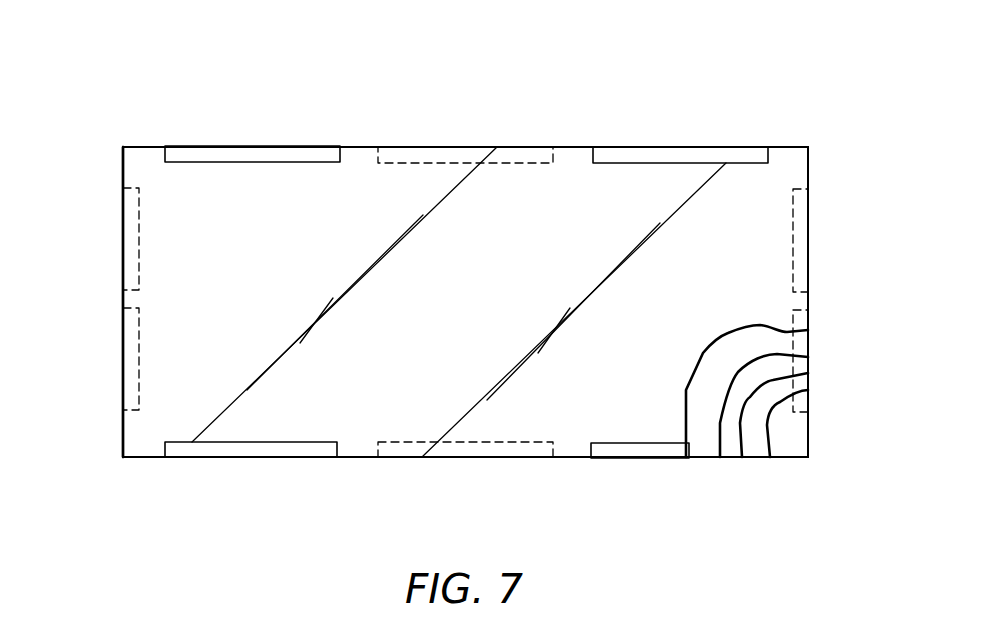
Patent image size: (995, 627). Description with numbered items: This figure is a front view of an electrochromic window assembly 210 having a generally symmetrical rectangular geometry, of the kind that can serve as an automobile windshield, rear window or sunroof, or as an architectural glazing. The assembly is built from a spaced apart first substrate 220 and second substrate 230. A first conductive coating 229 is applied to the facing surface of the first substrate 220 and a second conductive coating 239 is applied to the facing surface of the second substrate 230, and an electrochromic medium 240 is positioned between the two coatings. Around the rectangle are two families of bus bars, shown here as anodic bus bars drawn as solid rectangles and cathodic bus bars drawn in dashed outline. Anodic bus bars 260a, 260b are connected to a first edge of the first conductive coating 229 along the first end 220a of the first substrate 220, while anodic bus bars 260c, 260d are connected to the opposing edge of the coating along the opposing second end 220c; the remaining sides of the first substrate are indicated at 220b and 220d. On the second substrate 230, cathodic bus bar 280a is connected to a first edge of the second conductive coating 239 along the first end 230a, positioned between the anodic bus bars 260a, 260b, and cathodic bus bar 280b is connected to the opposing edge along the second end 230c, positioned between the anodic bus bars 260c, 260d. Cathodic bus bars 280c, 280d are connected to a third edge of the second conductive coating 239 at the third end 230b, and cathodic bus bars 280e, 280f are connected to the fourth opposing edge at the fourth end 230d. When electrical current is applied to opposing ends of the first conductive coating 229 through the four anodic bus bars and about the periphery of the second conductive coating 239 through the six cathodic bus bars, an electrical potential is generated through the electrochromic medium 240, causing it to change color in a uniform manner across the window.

The electrochromic window assembly 210 is at (128, 117).
The first substrate 220 is at (553, 226).
The first end of first substrate 220a is at (352, 147).
The substrate left edge 220b is at (123, 302).
The second end of first substrate 220c is at (568, 458).
The substrate right edge 220d is at (808, 174).
The second substrate 230 is at (797, 458).
The first end of second substrate 230a is at (352, 147).
The third end of second substrate 230b is at (123, 302).
The second end of second substrate 230c is at (780, 458).
The fourth end of second substrate 230d is at (808, 446).
The first conductive coating 229 is at (757, 343).
The electrochromic medium 240 is at (763, 378).
The second conductive coating 239 is at (758, 443).
The anodic bus bar 260a is at (246, 153).
The anodic bus bar 260b is at (673, 153).
The anodic bus bar 260c is at (242, 452).
The anodic bus bar 260d is at (650, 455).
The cathodic bus bar 280a is at (457, 157).
The cathodic bus bar 280b is at (452, 450).
The cathodic bus bar 280c is at (131, 210).
The cathodic bus bar 280d is at (133, 360).
The cathodic bus bar 280e is at (797, 234).
The cathodic bus bar 280f is at (802, 399).